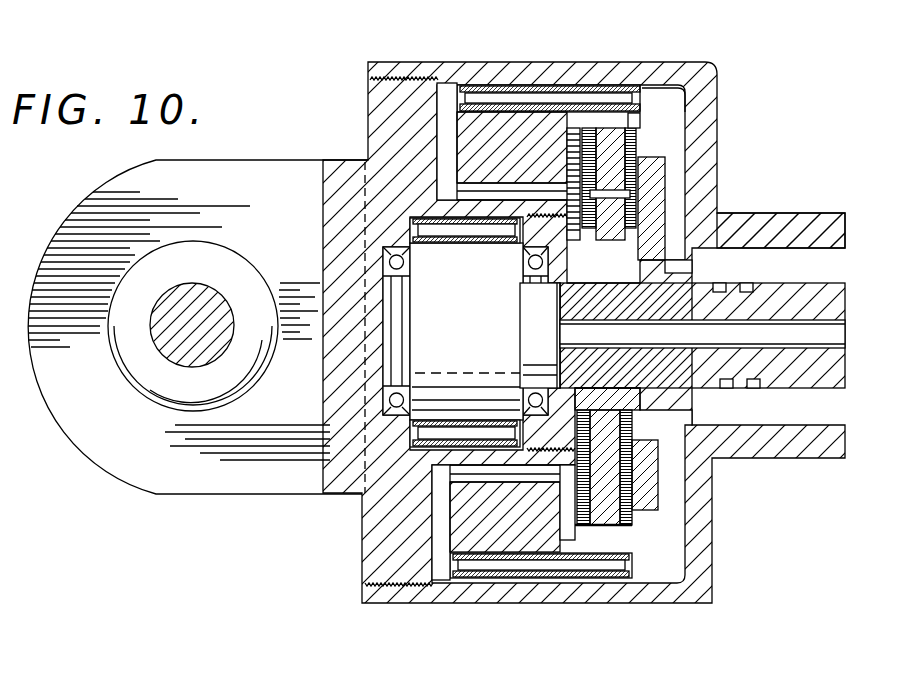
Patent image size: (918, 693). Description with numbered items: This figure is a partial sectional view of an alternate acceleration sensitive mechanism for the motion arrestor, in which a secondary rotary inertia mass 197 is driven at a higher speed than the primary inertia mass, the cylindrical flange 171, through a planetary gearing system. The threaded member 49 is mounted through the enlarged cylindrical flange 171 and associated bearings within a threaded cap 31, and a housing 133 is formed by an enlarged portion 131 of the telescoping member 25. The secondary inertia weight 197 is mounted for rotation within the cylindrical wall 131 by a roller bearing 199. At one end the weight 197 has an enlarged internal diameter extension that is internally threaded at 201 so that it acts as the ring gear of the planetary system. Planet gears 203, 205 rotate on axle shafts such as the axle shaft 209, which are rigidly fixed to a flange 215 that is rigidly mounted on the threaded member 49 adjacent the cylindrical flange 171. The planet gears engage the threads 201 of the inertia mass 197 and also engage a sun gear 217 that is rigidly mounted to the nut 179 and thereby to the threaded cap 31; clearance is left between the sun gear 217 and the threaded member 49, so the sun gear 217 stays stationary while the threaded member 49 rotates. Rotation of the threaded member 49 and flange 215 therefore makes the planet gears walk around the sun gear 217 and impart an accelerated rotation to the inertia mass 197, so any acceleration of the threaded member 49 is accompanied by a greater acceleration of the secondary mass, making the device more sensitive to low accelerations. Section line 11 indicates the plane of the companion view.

The section line 11 is at (616, 60).
The telescoping member 25 is at (800, 226).
The threaded cap 31 is at (385, 117).
The threaded member 49 is at (768, 296).
The enlarged portion 131 is at (663, 63).
The housing 133 is at (676, 110).
The cylindrical flange 171 is at (492, 335).
The nut 179 is at (520, 240).
The secondary rotary inertia mass 197 is at (535, 161).
The roller bearing 199 is at (488, 97).
The internal threads 201 is at (634, 144).
The planet gear 203 is at (667, 212).
The planet gear 205 is at (640, 452).
The axle shaft 209 is at (640, 182).
The flange 215 is at (652, 250).
The sun gear 217 is at (604, 400).